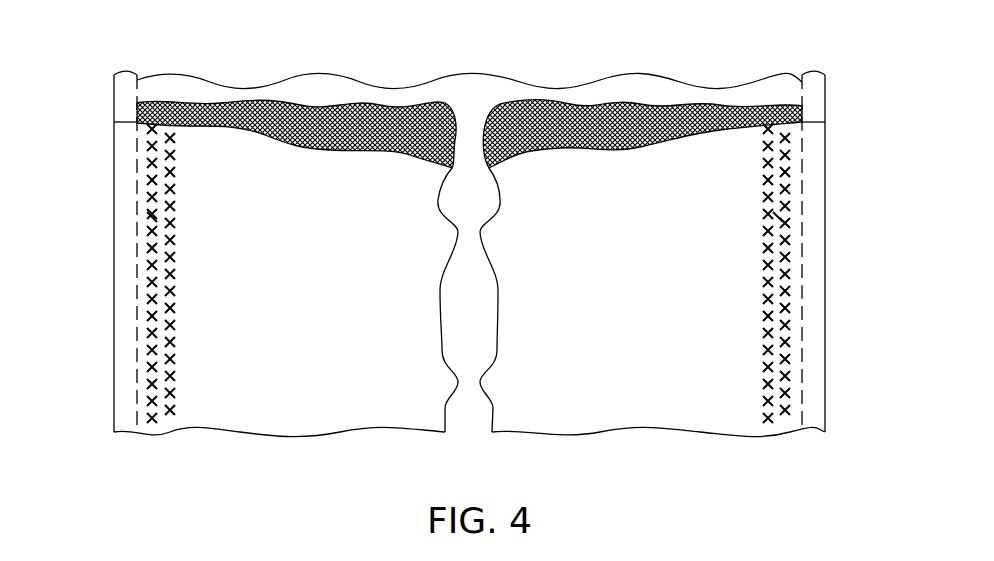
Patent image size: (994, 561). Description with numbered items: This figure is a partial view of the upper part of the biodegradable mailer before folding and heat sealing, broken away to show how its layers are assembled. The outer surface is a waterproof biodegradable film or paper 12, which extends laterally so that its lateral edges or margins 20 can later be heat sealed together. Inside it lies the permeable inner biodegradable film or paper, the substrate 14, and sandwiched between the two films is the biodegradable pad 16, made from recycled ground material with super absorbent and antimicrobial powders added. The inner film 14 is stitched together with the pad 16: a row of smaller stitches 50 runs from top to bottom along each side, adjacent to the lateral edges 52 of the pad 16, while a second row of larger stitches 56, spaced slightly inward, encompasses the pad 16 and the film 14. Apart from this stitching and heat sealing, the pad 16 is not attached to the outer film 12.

The biodegradable film or paper 12 is at (472, 107).
The inner biodegradable film or paper (substrate) 14 is at (222, 410).
The biodegradable pad 16 is at (602, 105).
The lateral edges or margins 20 is at (118, 306).
The smaller stitches 50 is at (150, 240).
The lateral edges of pad 52 is at (136, 112).
The larger stitches 56 is at (150, 222).